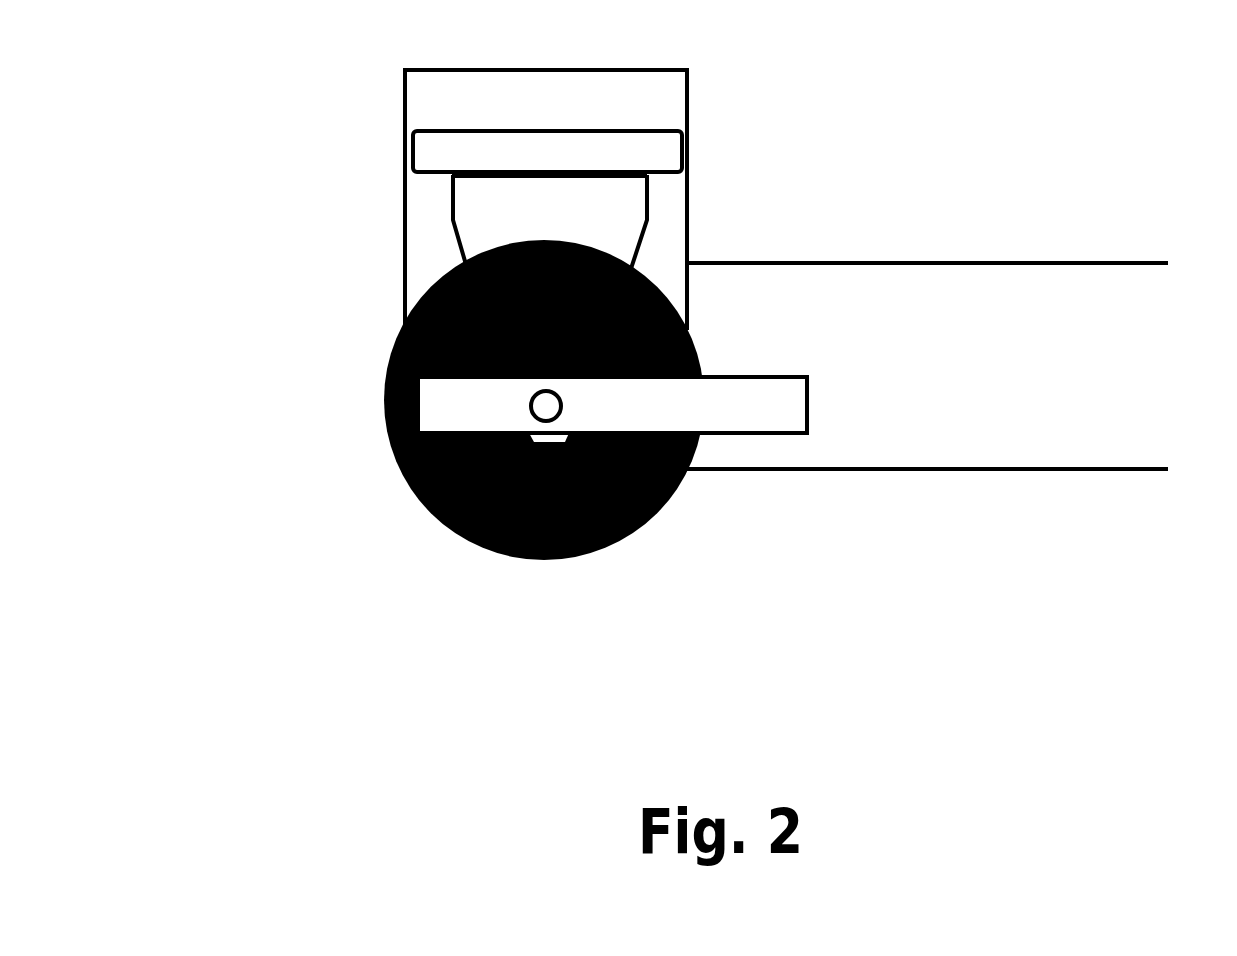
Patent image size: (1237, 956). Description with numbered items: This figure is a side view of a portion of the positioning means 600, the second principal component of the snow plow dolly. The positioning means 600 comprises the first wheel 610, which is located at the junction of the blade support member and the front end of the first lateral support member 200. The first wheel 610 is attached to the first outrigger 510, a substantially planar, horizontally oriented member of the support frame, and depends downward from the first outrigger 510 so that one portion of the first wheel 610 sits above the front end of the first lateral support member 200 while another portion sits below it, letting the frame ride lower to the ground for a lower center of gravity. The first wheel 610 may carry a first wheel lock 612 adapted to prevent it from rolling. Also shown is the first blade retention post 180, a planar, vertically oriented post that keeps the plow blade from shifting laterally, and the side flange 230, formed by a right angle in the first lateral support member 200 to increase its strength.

The first blade retention post 180 is at (648, 105).
The first lateral support member 200 is at (987, 262).
The side flange 230 is at (932, 505).
The first outrigger 510 is at (442, 153).
The positioning means 600 is at (372, 287).
The first wheel 610 is at (465, 419).
The first wheel lock 612 is at (647, 510).